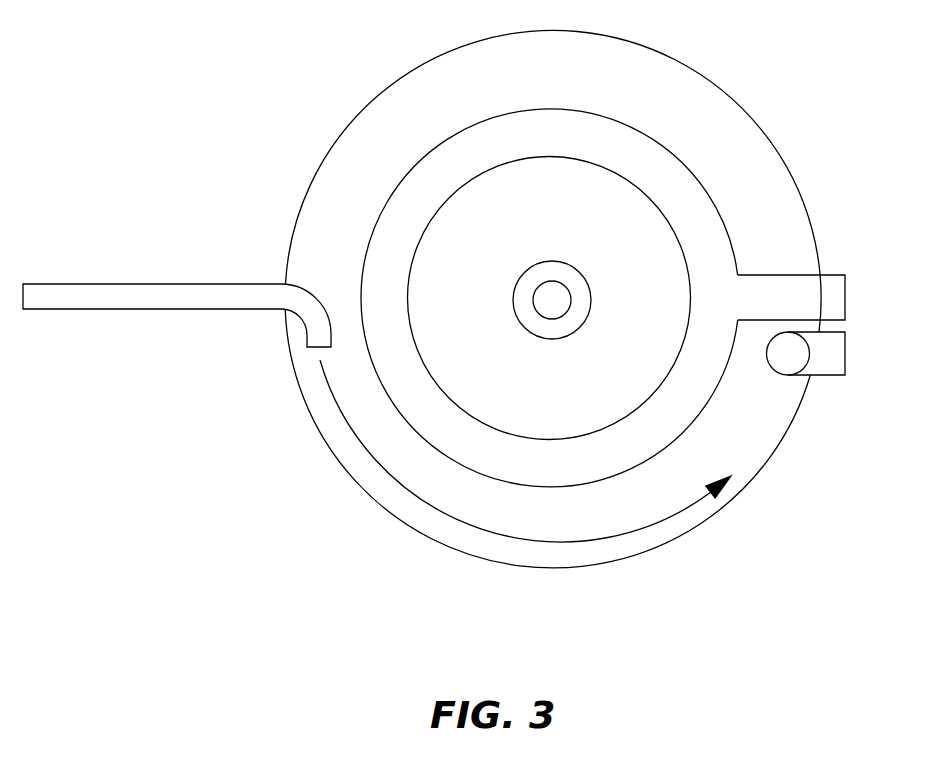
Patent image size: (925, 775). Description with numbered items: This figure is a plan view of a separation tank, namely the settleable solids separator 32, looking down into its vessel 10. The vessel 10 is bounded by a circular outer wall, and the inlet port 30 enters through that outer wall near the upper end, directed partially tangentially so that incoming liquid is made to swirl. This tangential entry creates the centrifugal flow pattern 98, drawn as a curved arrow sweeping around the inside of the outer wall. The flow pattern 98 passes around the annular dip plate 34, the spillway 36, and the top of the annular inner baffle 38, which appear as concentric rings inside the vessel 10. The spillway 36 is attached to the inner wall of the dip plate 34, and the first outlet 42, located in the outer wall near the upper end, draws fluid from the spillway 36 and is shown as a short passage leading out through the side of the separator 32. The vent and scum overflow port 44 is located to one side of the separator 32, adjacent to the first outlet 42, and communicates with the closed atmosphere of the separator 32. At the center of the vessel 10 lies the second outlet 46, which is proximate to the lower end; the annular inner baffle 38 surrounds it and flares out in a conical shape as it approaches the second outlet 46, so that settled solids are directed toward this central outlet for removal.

The vessel 10 is at (727, 90).
The inlet port 30 is at (290, 320).
The settleable solids separator 32 is at (785, 163).
The annular dip plate 34 is at (358, 270).
The spillway 36 is at (408, 213).
The annular inner baffle 38 is at (563, 338).
The first outlet 42 is at (797, 289).
The vent and scum overflow port 44 is at (787, 355).
The second outlet 46 is at (555, 302).
The centrifugal flow pattern 98 is at (553, 541).